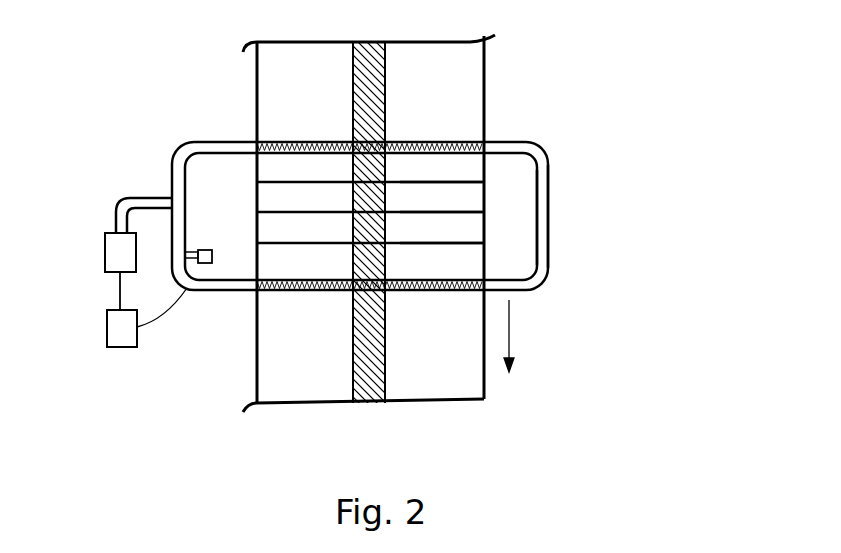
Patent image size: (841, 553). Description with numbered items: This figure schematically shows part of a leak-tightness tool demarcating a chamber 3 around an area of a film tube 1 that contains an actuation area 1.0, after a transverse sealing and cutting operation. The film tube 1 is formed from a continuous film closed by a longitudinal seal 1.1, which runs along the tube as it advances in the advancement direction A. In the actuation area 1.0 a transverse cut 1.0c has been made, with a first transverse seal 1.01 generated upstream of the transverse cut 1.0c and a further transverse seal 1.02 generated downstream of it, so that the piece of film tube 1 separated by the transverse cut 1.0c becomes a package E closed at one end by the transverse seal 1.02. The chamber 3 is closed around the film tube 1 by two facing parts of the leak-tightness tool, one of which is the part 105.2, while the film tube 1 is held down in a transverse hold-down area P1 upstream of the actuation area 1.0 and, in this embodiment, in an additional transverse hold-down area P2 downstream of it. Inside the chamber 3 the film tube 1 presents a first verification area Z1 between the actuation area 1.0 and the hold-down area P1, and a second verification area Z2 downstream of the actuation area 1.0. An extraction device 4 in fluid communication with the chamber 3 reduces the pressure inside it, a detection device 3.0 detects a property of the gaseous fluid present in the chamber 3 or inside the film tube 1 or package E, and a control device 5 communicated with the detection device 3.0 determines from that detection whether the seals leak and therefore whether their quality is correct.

The film tube 1 is at (246, 62).
The longitudinal seal 1.1 is at (388, 95).
The actuation area 1.0 is at (246, 172).
The first transverse seal 1.01 is at (473, 190).
The transverse cut 1.0c is at (471, 212).
The transverse seal 1.02 is at (437, 233).
The chamber 3 is at (204, 181).
The part of the leak-tightness tool 105.2 is at (549, 183).
The detection device 3.0 is at (205, 265).
The extraction device 4 is at (104, 248).
The control device 5 is at (106, 330).
The transverse hold-down area P1 is at (310, 138).
The additional transverse hold-down area P2 is at (288, 283).
The first verification area Z1 is at (283, 170).
The second verification area Z2 is at (266, 262).
The advancement direction A is at (519, 336).
The package E is at (250, 382).